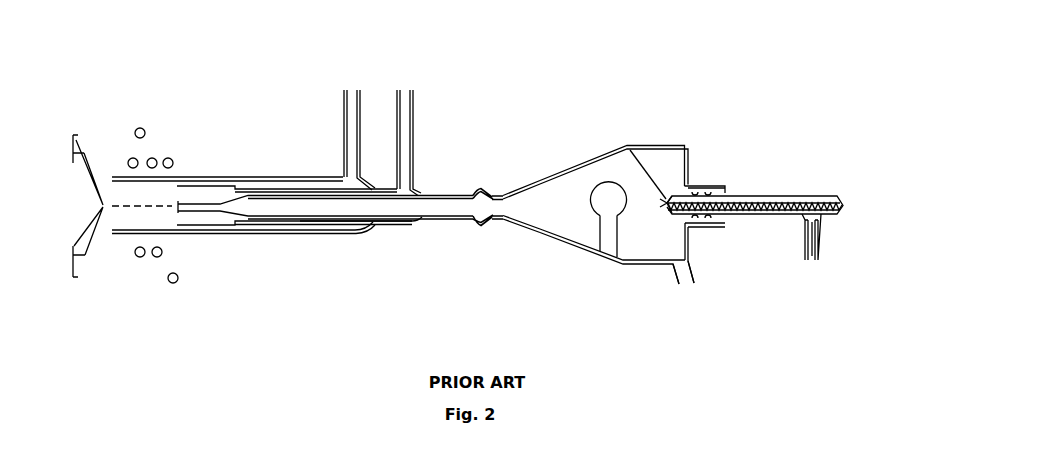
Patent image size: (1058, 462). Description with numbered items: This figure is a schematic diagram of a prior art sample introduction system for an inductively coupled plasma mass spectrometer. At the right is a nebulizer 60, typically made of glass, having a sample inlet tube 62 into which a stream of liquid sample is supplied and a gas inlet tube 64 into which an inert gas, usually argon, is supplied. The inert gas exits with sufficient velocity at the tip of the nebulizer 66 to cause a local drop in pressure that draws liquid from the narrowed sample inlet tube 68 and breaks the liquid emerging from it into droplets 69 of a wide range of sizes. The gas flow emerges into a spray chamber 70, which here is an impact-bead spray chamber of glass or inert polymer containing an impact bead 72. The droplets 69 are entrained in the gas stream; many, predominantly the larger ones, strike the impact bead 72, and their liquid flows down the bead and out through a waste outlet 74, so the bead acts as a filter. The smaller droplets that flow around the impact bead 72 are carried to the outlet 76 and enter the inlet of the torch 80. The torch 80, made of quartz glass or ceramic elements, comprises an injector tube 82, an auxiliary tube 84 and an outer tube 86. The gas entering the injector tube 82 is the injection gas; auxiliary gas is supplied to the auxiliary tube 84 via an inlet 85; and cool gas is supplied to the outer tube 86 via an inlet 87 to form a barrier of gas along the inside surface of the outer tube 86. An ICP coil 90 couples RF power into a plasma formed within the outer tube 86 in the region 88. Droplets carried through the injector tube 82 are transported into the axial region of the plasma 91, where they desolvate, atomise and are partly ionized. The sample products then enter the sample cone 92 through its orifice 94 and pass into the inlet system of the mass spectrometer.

The nebulizer 60 is at (790, 196).
The sample inlet tube 62 is at (843, 206).
The gas inlet tube 64 is at (815, 262).
The tip of the nebulizer 66 is at (667, 203).
The narrowed sample inlet tube 68 is at (671, 201).
The droplets 69 is at (661, 202).
The spray chamber 70 is at (557, 237).
The impact bead 72 is at (600, 214).
The waste outlet 74 is at (681, 285).
The outlet 76 is at (497, 203).
The torch 80 is at (403, 223).
The injector tube 82 is at (213, 203).
The auxiliary tube 84 is at (235, 227).
The inlet 85 is at (402, 90).
The outer tube 86 is at (322, 232).
The inlet 87 is at (352, 90).
The region 88 is at (128, 215).
The ICP coil 90 is at (153, 160).
The axial region of the plasma 91 is at (155, 208).
The sample cone 92 is at (72, 150).
The orifice 94 is at (102, 203).